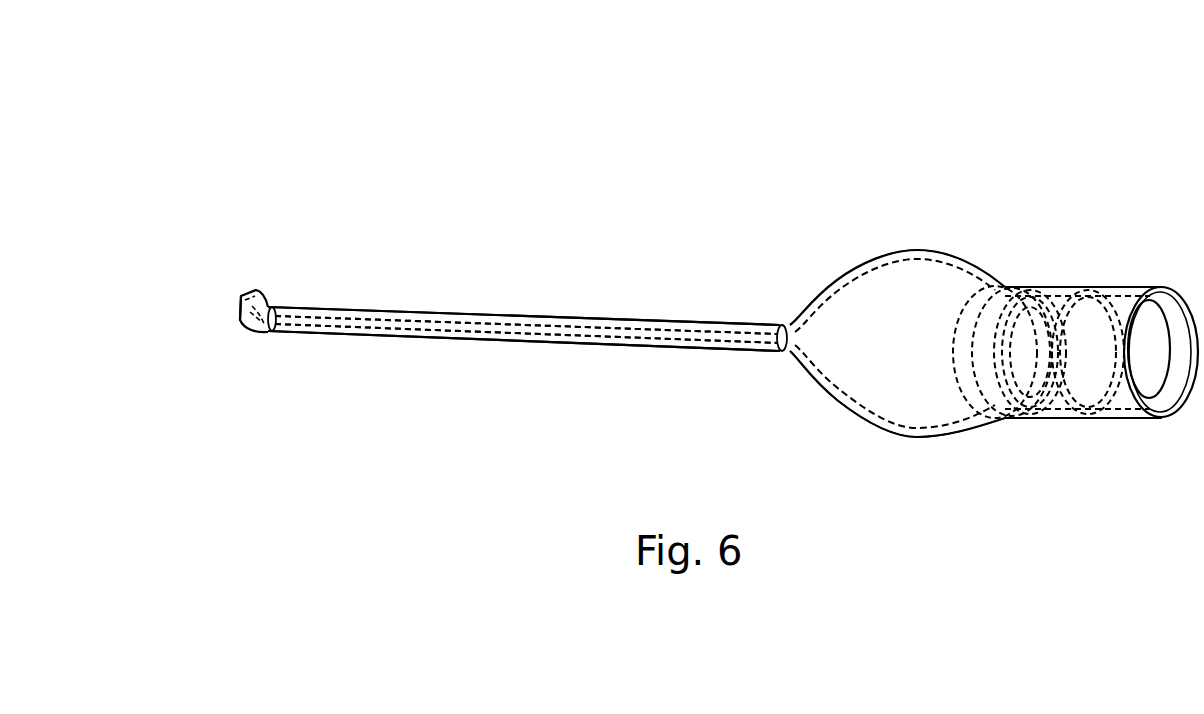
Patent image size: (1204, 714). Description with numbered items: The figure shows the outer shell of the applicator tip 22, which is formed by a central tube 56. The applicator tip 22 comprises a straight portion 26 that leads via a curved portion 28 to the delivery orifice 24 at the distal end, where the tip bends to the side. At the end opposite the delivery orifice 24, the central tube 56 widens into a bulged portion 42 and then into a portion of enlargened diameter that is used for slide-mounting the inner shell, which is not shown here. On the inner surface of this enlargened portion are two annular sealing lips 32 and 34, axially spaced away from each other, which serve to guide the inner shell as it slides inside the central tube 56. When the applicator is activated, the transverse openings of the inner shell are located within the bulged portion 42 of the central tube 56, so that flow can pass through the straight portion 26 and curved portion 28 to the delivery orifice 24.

The central tube 56 is at (801, 120).
The applicator tip 22 is at (524, 311).
The delivery orifice 24 is at (240, 298).
The straight portion 26 is at (508, 330).
The curved portion 28 is at (241, 325).
The annular sealing lip 32 is at (1128, 288).
The annular sealing lip 34 is at (1048, 288).
The bulged portion 42 is at (920, 250).